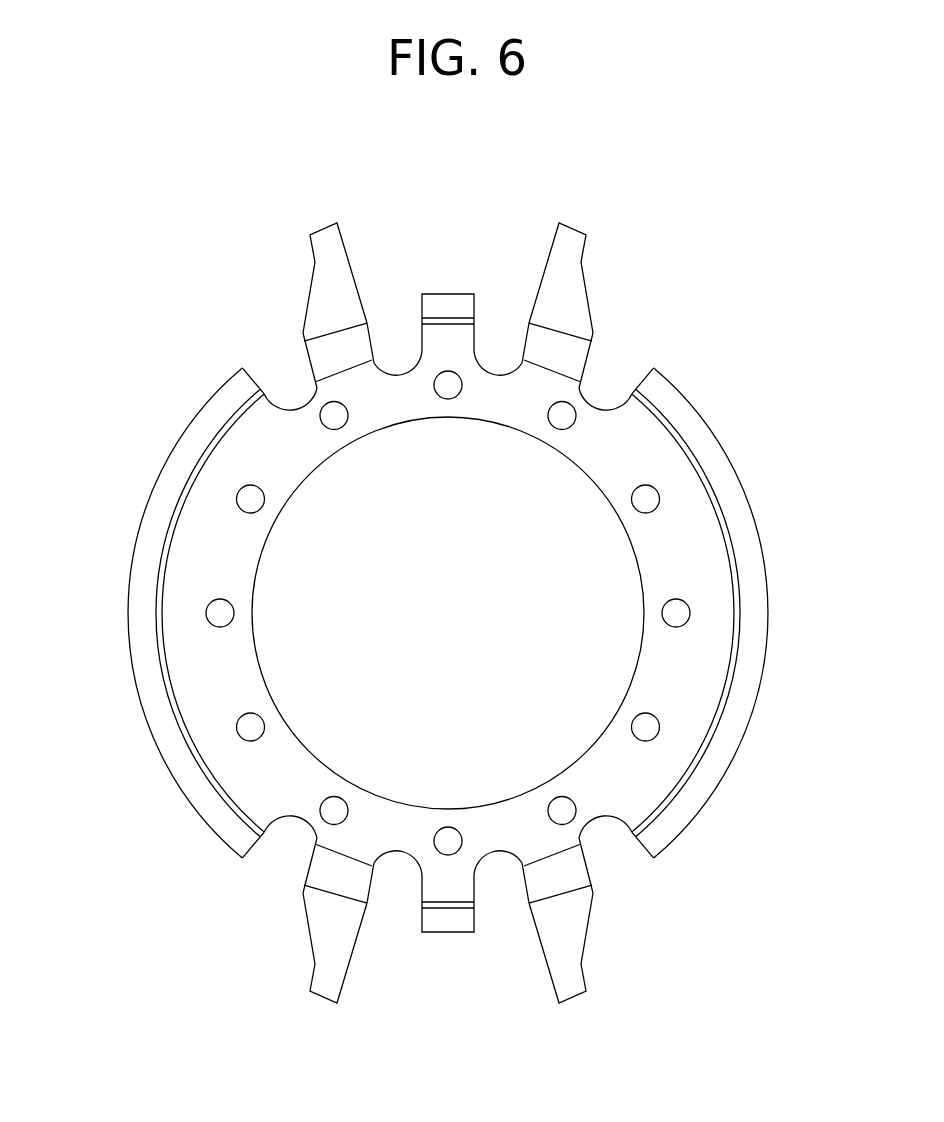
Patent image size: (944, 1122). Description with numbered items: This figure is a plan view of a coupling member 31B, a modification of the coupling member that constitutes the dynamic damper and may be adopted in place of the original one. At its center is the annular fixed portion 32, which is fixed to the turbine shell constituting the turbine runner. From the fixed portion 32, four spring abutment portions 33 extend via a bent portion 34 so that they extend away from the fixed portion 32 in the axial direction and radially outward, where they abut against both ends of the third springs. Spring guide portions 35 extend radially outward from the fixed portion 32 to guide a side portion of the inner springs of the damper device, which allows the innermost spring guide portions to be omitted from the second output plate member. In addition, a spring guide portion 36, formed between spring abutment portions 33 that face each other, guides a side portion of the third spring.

The coupling member 31B is at (752, 428).
The fixed portion 32 is at (237, 642).
The spring abutment portion 33 is at (322, 236).
The bent portion 34 is at (322, 360).
The spring guide portion 35 is at (138, 642).
The spring guide portion 36 is at (453, 303).